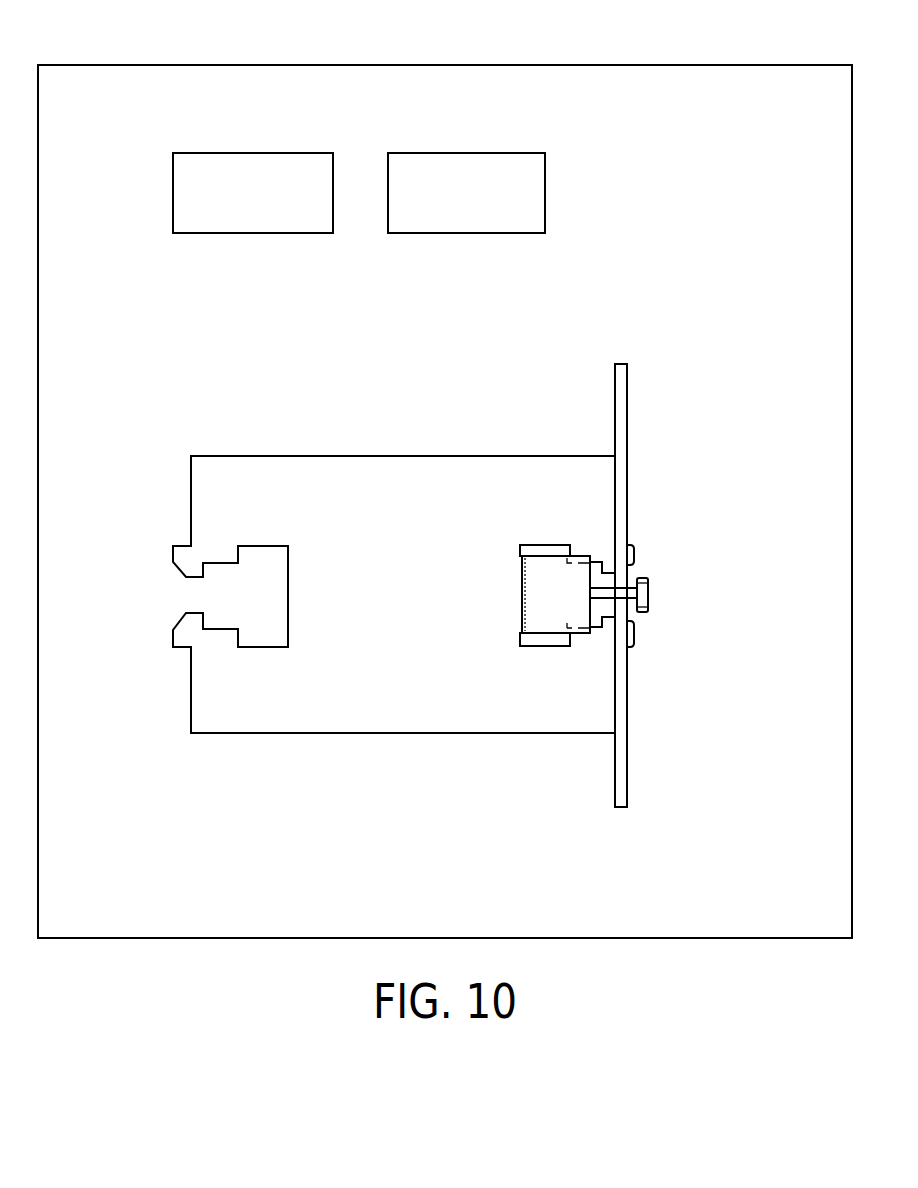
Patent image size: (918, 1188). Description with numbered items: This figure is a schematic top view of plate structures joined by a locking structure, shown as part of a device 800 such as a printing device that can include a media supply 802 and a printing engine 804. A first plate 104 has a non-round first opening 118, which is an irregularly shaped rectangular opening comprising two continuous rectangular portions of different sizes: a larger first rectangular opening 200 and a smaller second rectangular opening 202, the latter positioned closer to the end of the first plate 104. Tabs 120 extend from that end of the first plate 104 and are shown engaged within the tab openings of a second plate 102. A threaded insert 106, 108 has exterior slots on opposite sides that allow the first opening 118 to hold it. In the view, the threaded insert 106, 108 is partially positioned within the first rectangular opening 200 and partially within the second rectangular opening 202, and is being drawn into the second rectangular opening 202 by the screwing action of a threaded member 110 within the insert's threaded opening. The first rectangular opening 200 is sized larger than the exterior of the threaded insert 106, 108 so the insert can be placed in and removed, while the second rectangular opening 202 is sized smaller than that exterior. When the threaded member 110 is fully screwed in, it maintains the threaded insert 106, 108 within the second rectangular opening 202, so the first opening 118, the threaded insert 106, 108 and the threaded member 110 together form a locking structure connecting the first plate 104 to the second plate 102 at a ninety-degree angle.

The device 800 is at (293, 65).
The media supply 802 is at (268, 233).
The printing engine 804 is at (477, 233).
The second plate 102 is at (627, 420).
The first plate 104 is at (317, 747).
The threaded insert 106 is at (550, 556).
The threaded insert 108 is at (578, 593).
The threaded member 110 is at (649, 593).
The first opening 118 is at (530, 547).
The tabs 120 is at (633, 548).
The first rectangular opening 200 is at (521, 639).
The second rectangular opening 202 is at (593, 628).